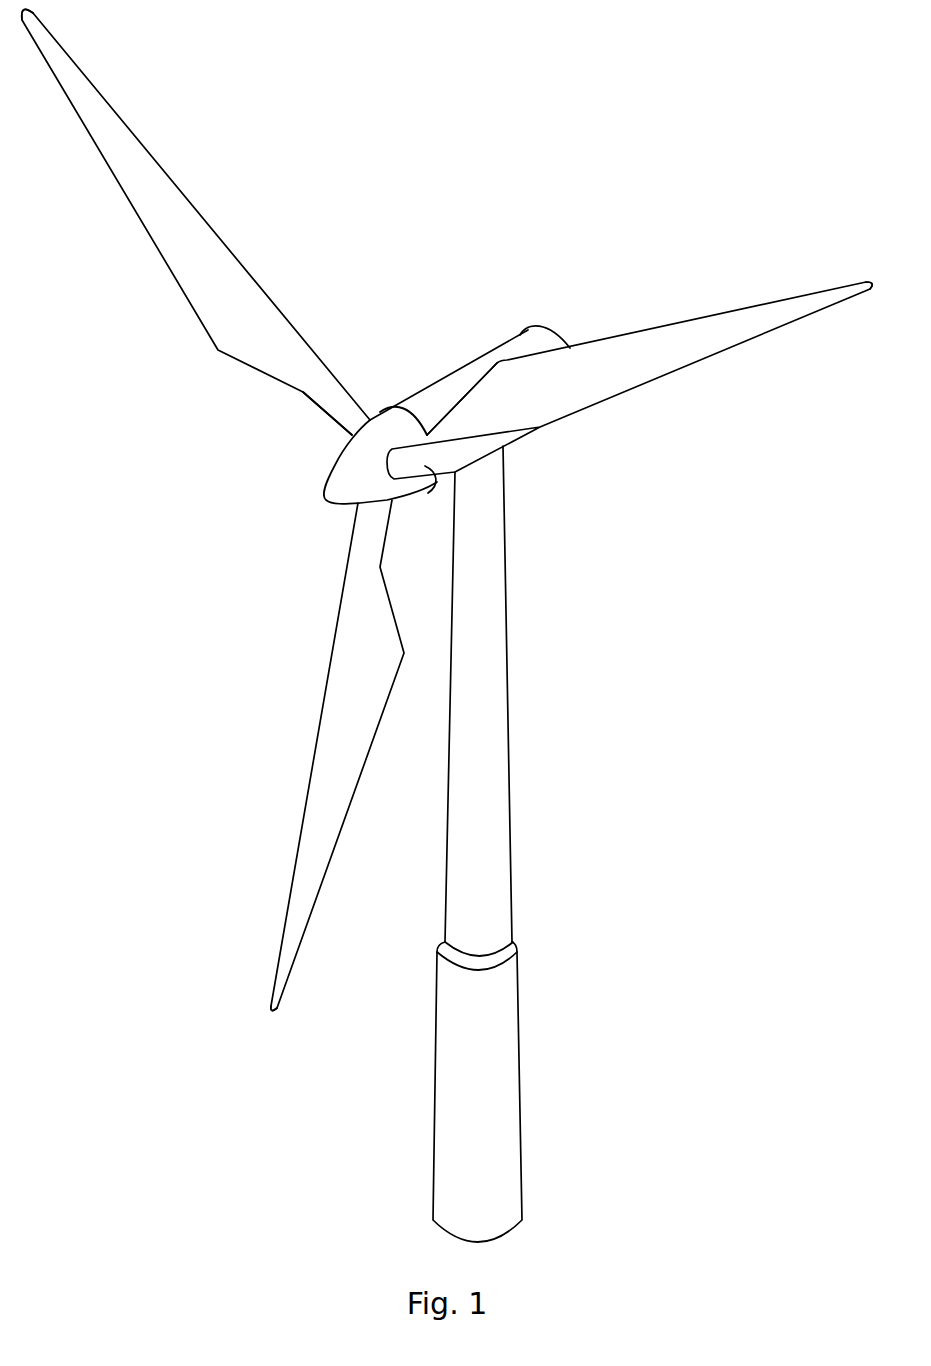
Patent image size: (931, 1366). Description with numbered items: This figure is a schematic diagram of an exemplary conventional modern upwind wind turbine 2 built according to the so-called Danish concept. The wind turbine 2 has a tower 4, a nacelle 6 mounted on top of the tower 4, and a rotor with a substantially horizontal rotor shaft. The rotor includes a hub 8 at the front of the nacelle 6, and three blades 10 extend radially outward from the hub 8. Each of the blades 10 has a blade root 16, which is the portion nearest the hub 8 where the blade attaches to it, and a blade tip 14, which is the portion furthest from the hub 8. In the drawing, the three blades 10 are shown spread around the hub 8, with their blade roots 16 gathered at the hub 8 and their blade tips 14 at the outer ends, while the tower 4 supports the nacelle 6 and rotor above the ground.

The wind turbine 2 is at (616, 778).
The tower 4 is at (497, 698).
The nacelle 6 is at (440, 388).
The hub 8 is at (347, 477).
The blades 10 is at (230, 322).
The blade tip 14 is at (70, 72).
The blade root 16 is at (353, 430).